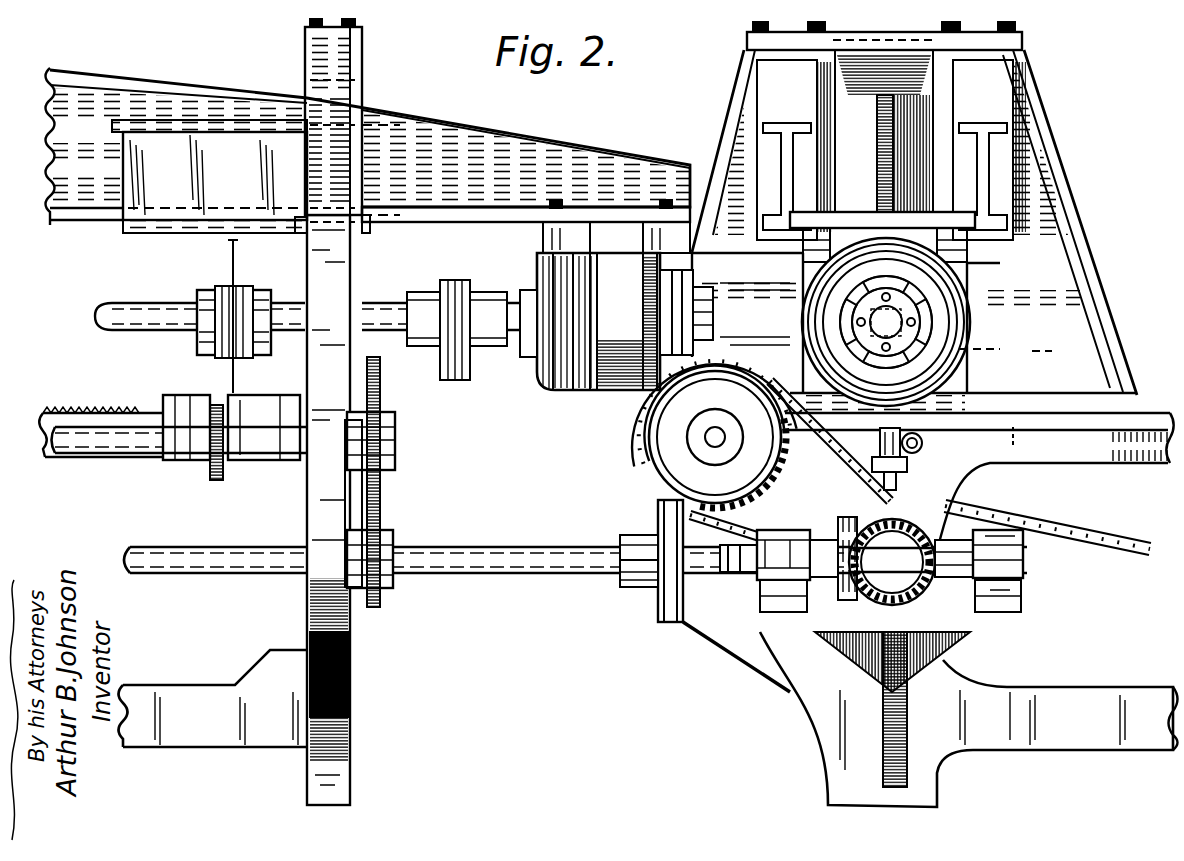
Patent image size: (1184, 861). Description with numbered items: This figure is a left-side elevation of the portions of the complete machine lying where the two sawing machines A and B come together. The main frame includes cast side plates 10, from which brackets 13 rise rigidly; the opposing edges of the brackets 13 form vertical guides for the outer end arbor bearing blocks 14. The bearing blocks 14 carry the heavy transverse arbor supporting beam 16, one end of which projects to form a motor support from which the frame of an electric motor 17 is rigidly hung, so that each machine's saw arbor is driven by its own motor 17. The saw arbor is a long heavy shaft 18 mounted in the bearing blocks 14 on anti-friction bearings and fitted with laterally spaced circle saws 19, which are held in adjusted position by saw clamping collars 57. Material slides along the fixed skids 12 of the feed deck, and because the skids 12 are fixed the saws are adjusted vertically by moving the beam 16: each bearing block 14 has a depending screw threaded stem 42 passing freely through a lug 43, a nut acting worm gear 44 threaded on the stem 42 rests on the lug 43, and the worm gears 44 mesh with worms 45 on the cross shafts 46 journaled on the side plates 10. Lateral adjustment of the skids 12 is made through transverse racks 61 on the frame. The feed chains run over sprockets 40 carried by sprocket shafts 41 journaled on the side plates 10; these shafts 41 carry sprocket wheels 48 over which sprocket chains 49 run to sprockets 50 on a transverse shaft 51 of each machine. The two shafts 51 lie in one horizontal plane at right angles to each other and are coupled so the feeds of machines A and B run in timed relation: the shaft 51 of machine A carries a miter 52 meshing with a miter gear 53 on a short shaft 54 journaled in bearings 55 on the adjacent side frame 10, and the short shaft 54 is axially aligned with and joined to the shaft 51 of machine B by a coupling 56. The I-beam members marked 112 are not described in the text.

The side plate 10 is at (1120, 652).
The skid 12 is at (187, 392).
The bracket 13 is at (687, 156).
The bearing block 14 is at (370, 232).
The arbor supporting beam 16 is at (1040, 84).
The electric motor 17 is at (745, 322).
The saw arbor 18 is at (143, 332).
The circle saw 19 is at (229, 268).
The sprocket 40 is at (217, 482).
The sprocket shaft 41 is at (147, 456).
The screw threaded stem 42 is at (903, 476).
The lug 43 is at (880, 447).
The worm gear 44 is at (868, 440).
The worm 45 is at (900, 430).
The cross shaft 46 is at (960, 368).
The sprocket wheel 48 is at (378, 398).
The sprocket chain 49 is at (383, 487).
The sprocket 50 is at (392, 545).
The transverse shaft 51 is at (160, 582).
The miter 52 is at (930, 500).
The miter gear 53 is at (925, 488).
The short shaft 54 is at (712, 618).
The bearing 55 is at (1030, 582).
The coupling 56 is at (660, 625).
The saw clamping collar 57 is at (250, 290).
The transverse rack 61 is at (70, 406).
The I-beam 112 is at (1056, 126).
The machine A is at (1076, 200).
The machine B is at (360, 650).